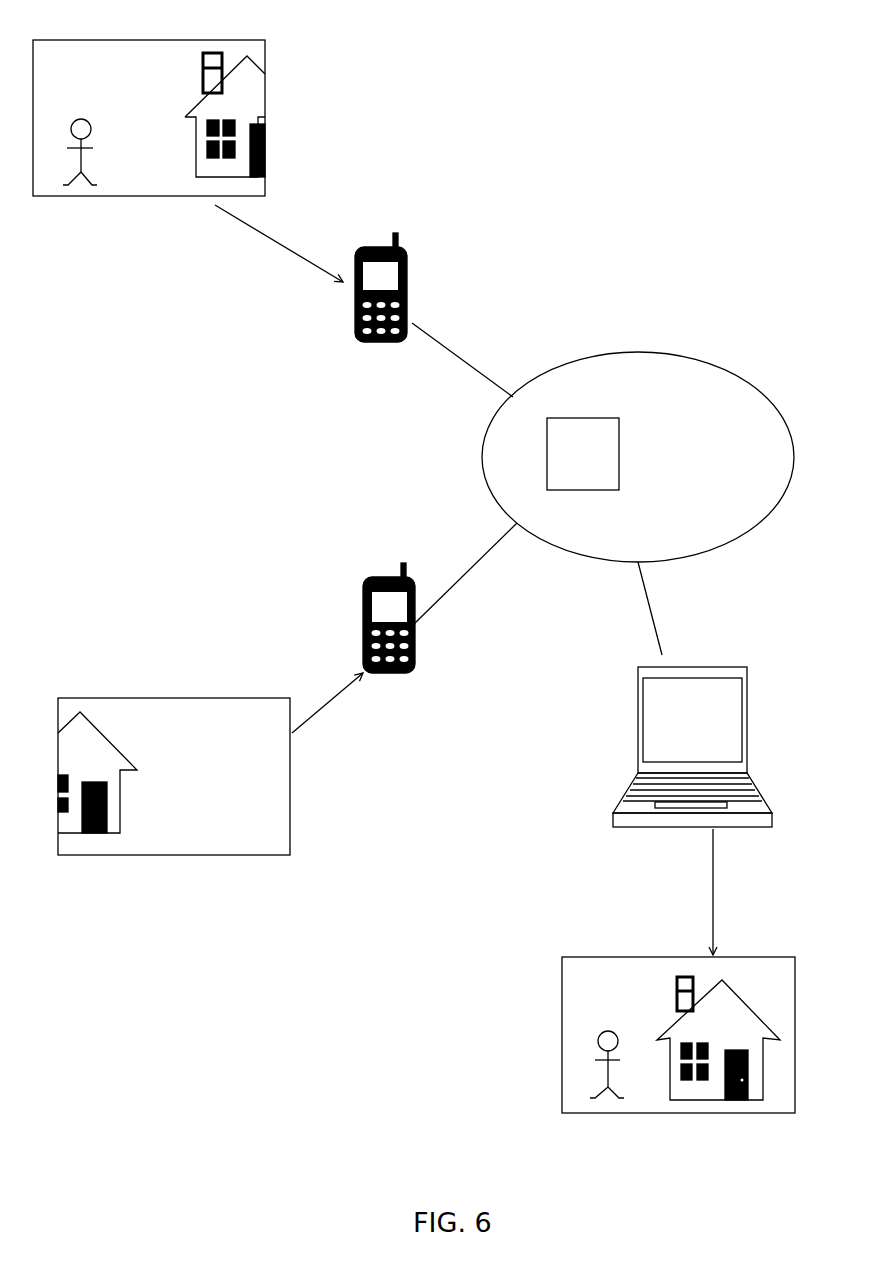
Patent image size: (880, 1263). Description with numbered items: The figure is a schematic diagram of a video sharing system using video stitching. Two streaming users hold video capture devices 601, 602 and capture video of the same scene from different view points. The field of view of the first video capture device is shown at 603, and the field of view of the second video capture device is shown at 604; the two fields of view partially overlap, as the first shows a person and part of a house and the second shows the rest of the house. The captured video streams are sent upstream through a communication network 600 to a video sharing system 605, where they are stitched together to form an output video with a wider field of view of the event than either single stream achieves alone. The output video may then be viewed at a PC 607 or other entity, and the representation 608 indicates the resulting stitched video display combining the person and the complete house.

The communication network 600 is at (637, 352).
The video capture device 601 is at (373, 342).
The video capture device 602 is at (413, 665).
The field of view of first video capture device 603 is at (267, 113).
The field of view of second video capture device 604 is at (174, 802).
The video sharing system 605 is at (585, 490).
The PC 607 is at (748, 685).
The representation 608 is at (677, 1113).